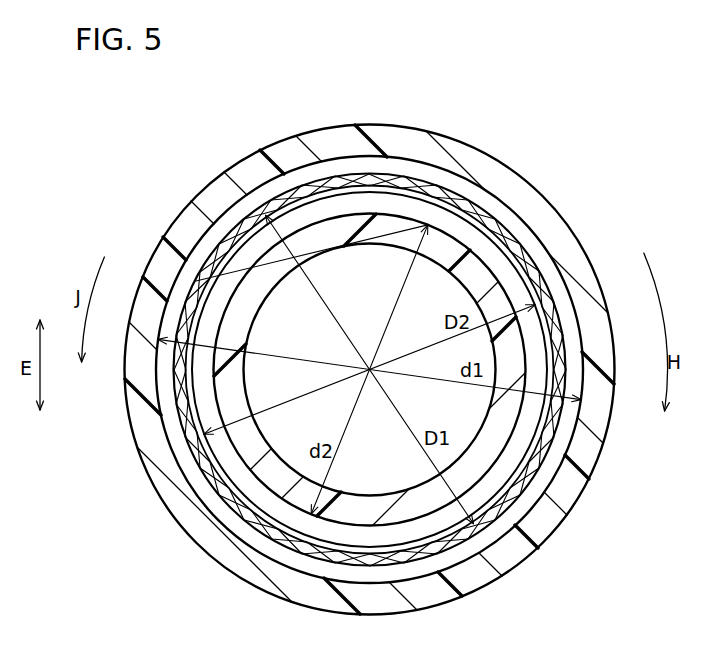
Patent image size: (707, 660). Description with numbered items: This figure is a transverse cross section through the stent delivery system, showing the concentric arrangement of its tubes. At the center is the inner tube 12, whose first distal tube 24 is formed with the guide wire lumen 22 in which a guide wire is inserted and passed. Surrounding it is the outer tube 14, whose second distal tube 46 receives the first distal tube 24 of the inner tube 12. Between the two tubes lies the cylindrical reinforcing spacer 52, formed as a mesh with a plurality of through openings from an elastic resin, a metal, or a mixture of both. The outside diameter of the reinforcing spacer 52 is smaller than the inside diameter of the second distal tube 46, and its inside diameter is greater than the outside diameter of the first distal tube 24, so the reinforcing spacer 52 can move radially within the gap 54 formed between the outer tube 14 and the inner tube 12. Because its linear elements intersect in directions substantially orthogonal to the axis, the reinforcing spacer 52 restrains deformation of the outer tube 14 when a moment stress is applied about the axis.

The inner tube 12 is at (358, 241).
The outer tube 14 is at (585, 236).
The guide wire lumen 22 is at (237, 398).
The first distal tube 24 is at (245, 305).
The second distal tube 46 is at (571, 487).
The reinforcing spacer 52 is at (314, 188).
The gap 54 is at (483, 202).